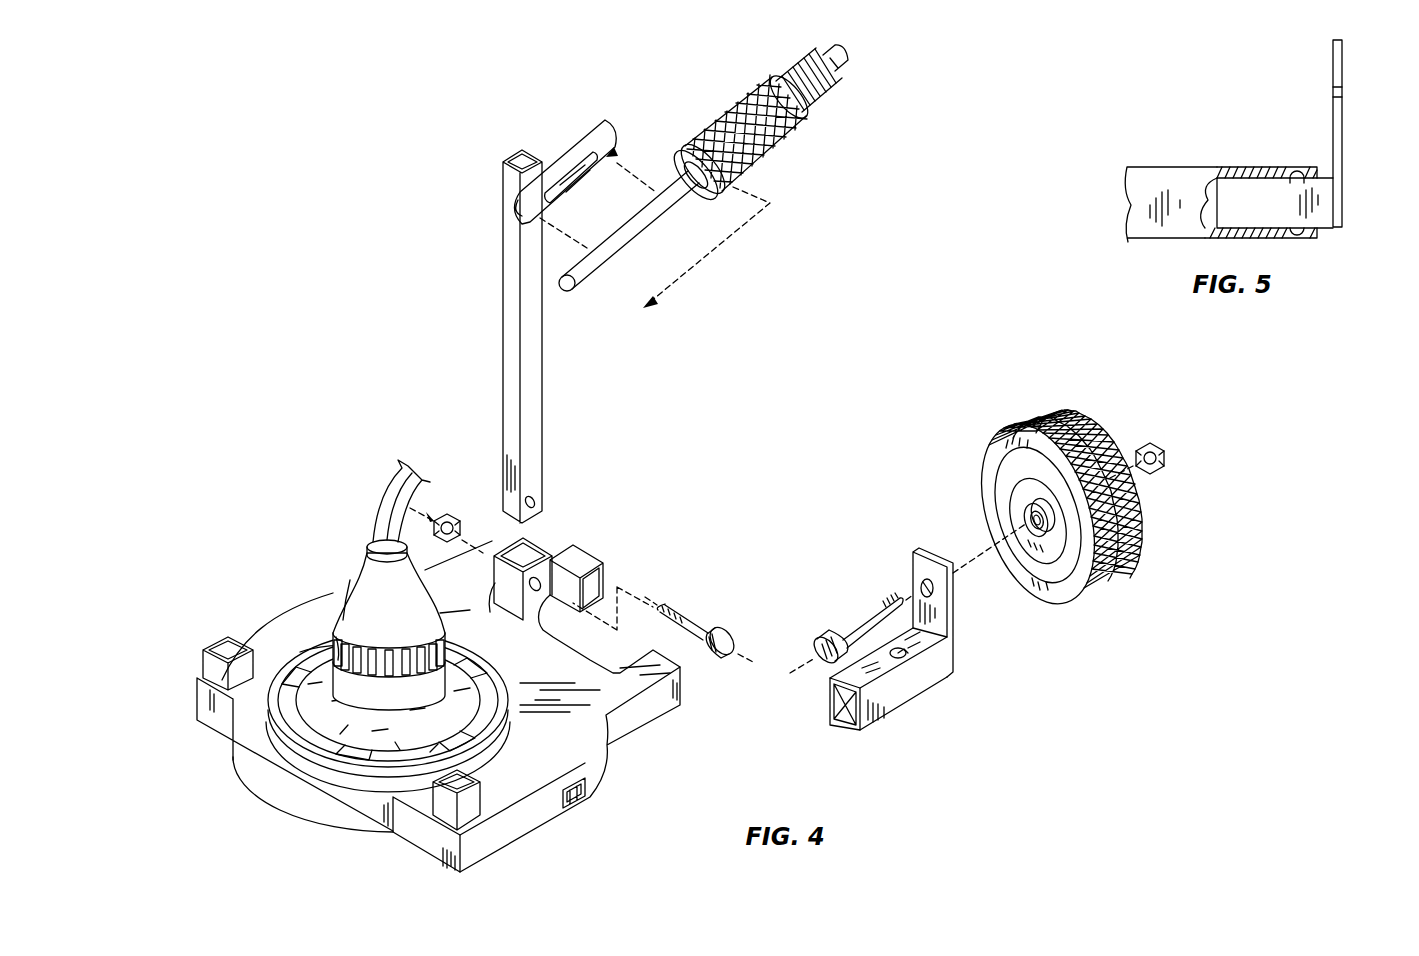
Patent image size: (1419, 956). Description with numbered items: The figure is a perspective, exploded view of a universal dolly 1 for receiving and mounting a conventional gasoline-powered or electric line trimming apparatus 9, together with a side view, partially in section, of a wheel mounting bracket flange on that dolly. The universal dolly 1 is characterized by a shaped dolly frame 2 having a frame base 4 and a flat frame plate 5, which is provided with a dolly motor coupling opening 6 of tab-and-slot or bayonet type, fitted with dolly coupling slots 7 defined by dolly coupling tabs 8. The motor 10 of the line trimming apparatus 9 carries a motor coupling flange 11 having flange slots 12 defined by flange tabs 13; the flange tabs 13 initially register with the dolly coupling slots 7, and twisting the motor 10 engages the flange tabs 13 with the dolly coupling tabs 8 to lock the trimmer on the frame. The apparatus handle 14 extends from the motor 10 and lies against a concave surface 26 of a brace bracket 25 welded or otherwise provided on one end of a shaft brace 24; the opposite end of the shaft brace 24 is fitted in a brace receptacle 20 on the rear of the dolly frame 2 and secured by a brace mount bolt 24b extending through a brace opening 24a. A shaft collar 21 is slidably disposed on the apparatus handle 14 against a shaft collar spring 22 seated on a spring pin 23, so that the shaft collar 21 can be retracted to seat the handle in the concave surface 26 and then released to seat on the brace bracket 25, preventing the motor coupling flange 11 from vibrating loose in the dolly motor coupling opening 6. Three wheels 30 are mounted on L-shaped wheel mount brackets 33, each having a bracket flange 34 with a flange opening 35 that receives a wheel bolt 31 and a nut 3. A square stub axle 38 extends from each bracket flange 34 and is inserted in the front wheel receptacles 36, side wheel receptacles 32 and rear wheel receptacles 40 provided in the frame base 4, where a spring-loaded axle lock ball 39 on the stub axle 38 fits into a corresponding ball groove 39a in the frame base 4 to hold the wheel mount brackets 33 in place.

In FIG. 4, the universal dolly 1 is at (236, 580).
In FIG. 4, the dolly frame 2 is at (235, 793).
In FIG. 5, the dolly frame 2 is at (1112, 207).
In FIG. 4, the nut 3 is at (454, 517).
In FIG. 4, the frame base 4 is at (282, 793).
In FIG. 5, the frame base 4 is at (1160, 165).
In FIG. 4, the frame plate 5 is at (563, 693).
In FIG. 4, the dolly motor coupling opening 6 is at (387, 742).
In FIG. 4, the dolly coupling slots 7 is at (272, 742).
In FIG. 4, the dolly coupling tabs 8 is at (482, 700).
In FIG. 4, the line trimming apparatus 9 is at (343, 548).
In FIG. 4, the motor 10 is at (374, 618).
In FIG. 4, the motor coupling flange 11 is at (480, 700).
In FIG. 4, the flange slots 12 is at (466, 660).
In FIG. 4, the flange tabs 13 is at (317, 660).
In FIG. 4, the apparatus handle 14 is at (392, 500).
In FIG. 4, the brace receptacle 20 is at (530, 550).
In FIG. 4, the shaft collar 21 is at (743, 115).
In FIG. 4, the shaft collar spring 22 is at (804, 120).
In FIG. 4, the spring pin 23 is at (822, 76).
In FIG. 4, the shaft brace 24 is at (530, 440).
In FIG. 4, the brace opening 24a is at (536, 501).
In FIG. 4, the brace mount bolt 24b is at (700, 625).
In FIG. 4, the brace bracket 25 is at (570, 140).
In FIG. 4, the concave surface 26 is at (612, 150).
In FIG. 4, the wheels 30 is at (993, 421).
In FIG. 4, the wheel bolt 31 is at (850, 627).
In FIG. 4, the side wheel receptacles 32 is at (576, 793).
In FIG. 4, the wheel mount brackets 33 is at (930, 701).
In FIG. 5, the wheel mount brackets 33 is at (1352, 193).
In FIG. 4, the bracket flange 34 is at (933, 631).
In FIG. 5, the bracket flange 34 is at (1346, 133).
In FIG. 4, the flange opening 35 is at (919, 585).
In FIG. 5, the flange opening 35 is at (1346, 92).
In FIG. 4, the front wheel receptacles 36 is at (222, 645).
In FIG. 4, the stub axle 38 is at (883, 708).
In FIG. 5, the stub axle 38 is at (1320, 218).
In FIG. 4, the axle lock ball 39 is at (904, 656).
In FIG. 5, the axle lock ball 39 is at (1292, 186).
In FIG. 5, the ball groove 39a is at (1293, 168).
In FIG. 4, the rear wheel receptacles 40 is at (598, 563).